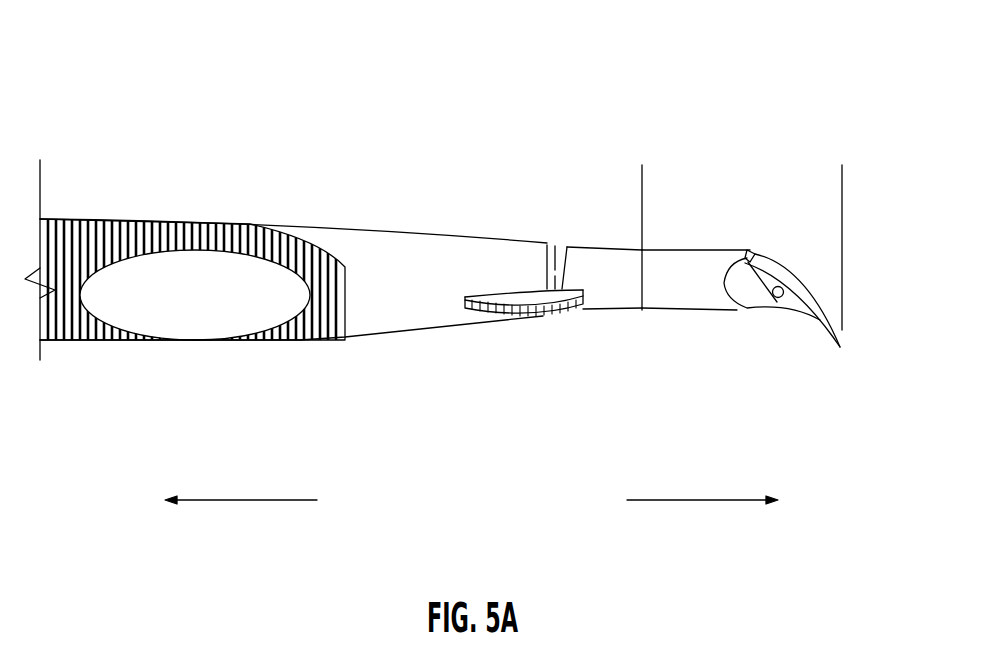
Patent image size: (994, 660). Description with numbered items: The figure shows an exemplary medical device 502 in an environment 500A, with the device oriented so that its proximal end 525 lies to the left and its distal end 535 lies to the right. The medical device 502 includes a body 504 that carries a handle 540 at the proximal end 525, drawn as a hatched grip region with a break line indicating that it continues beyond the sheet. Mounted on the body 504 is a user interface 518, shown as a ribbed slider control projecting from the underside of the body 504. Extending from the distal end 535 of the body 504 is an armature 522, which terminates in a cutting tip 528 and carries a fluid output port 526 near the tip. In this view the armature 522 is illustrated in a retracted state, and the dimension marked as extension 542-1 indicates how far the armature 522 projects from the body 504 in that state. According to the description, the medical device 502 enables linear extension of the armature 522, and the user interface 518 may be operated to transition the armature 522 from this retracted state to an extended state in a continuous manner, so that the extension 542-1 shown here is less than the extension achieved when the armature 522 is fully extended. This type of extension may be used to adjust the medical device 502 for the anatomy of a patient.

The environment 500A is at (466, 35).
The medical device 502 is at (248, 71).
The body 504 is at (332, 226).
The user interface 518 is at (545, 320).
The armature 522 is at (677, 311).
The fluid output port 526 is at (776, 299).
The cutting tip 528 is at (850, 368).
The handle 540 is at (185, 393).
The extension 542-1 is at (842, 180).
The proximal end 525 is at (232, 500).
The distal end 535 is at (700, 500).